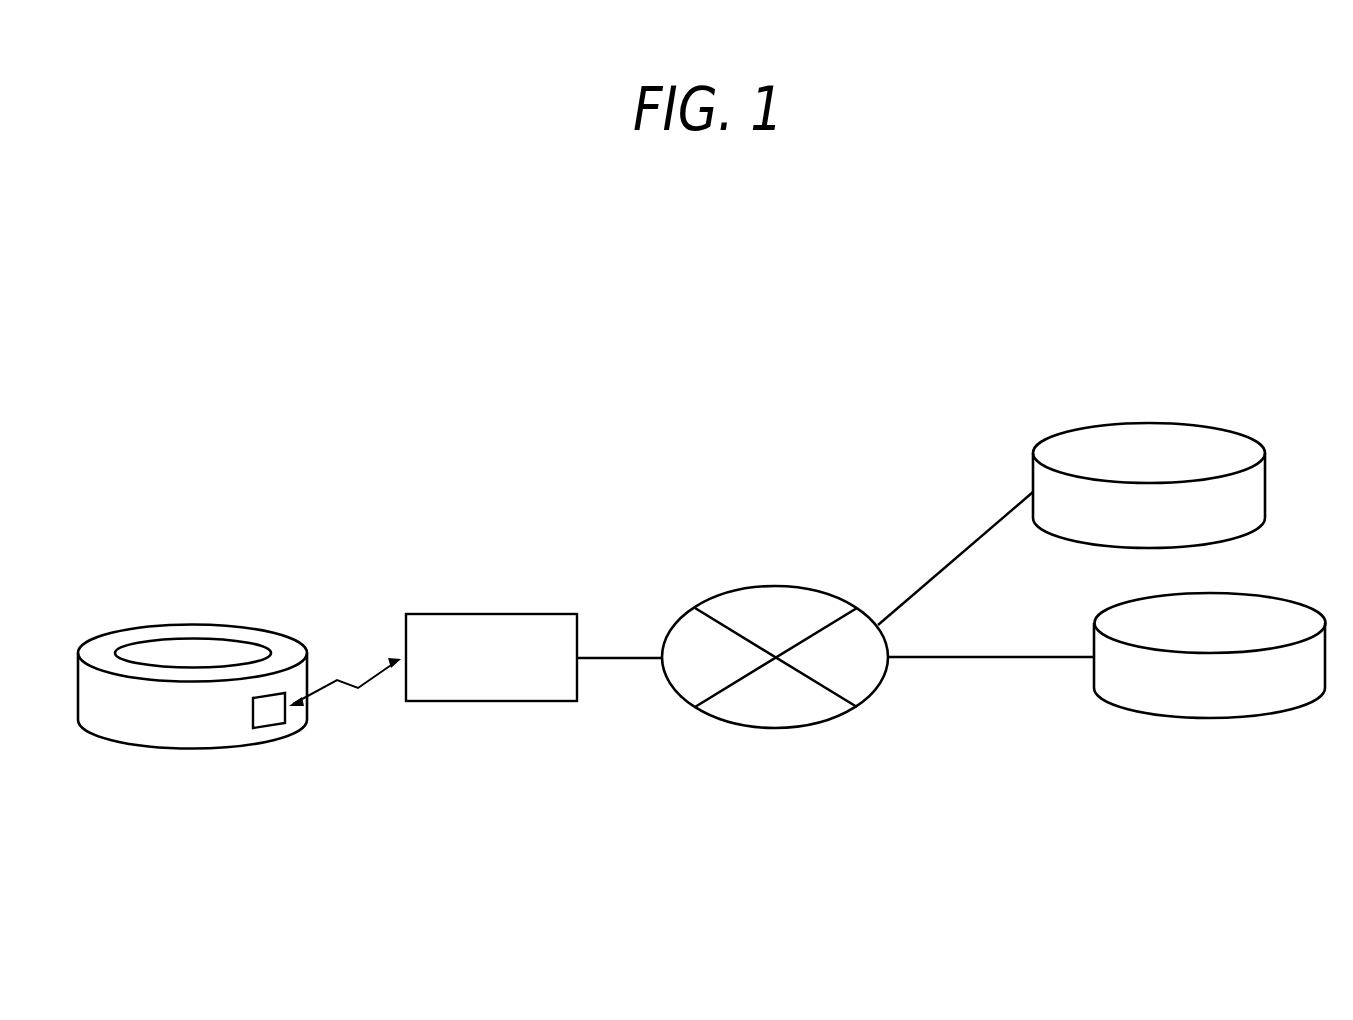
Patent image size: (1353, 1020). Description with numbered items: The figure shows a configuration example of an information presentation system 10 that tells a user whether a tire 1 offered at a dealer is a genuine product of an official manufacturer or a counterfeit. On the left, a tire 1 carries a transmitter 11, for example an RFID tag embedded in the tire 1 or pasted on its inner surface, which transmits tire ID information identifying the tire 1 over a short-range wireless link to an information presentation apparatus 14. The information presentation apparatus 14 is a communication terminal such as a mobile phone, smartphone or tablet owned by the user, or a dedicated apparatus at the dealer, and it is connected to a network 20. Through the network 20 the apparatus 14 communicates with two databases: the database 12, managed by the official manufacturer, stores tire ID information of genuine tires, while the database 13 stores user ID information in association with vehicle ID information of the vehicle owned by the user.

The information presentation system 10 is at (377, 366).
The tire 1 is at (152, 625).
The transmitter 11 is at (270, 722).
The information presentation apparatus 14 is at (537, 614).
The network 20 is at (813, 590).
The database 12 is at (1207, 427).
The database 13 is at (1267, 597).